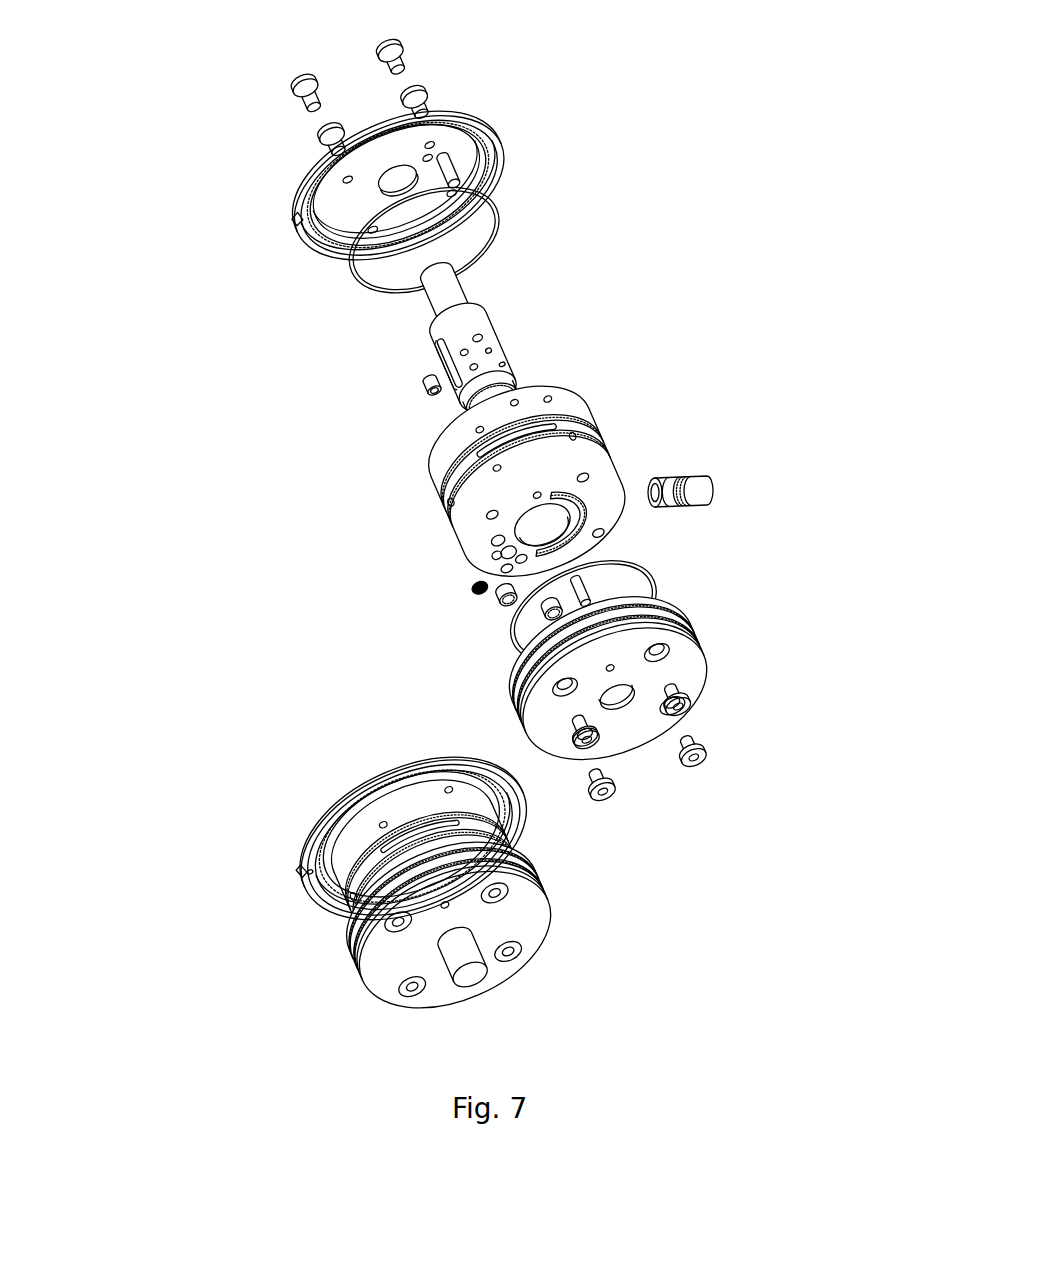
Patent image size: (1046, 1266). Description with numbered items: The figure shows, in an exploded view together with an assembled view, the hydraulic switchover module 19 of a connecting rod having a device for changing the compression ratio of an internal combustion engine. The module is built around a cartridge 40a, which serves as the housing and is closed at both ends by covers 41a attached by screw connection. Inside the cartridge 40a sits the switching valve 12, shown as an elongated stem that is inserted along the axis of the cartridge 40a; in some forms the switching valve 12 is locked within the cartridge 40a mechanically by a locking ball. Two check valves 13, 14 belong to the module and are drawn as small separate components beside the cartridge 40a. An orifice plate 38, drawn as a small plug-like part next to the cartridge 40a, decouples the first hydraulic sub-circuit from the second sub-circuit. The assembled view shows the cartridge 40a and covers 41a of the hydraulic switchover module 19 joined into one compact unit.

The hydraulic switchover module 19 is at (249, 64).
The cover 41a is at (428, 114).
The cartridge 40a is at (453, 447).
The switching valve 12 is at (453, 364).
The check valve 13 is at (472, 588).
The check valve 14 is at (540, 608).
The orifice plate 38 is at (698, 480).